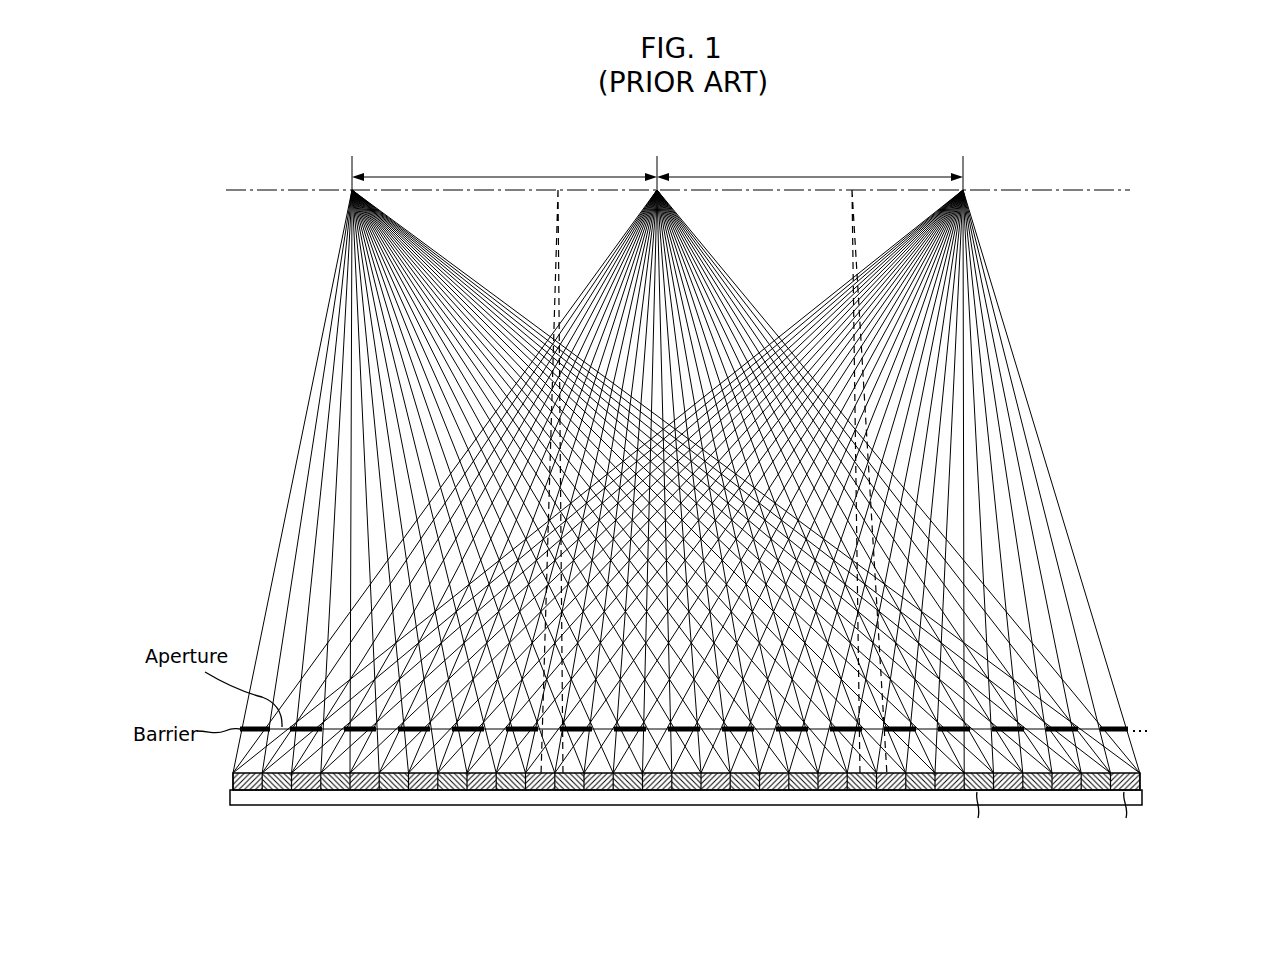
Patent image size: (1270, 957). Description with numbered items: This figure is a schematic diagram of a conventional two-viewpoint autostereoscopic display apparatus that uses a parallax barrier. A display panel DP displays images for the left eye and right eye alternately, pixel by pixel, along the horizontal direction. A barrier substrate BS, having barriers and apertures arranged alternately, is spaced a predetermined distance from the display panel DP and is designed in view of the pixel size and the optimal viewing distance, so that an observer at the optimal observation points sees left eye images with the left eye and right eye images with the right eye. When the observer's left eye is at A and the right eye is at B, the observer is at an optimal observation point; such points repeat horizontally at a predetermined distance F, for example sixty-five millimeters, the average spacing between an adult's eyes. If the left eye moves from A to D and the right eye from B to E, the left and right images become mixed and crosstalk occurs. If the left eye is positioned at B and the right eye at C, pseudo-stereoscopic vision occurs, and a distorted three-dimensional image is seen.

The optimal observation point for the left eye A is at (966, 188).
The optimal observation point for the right eye B is at (653, 188).
The observation point C is at (349, 188).
The intermediate observation point for the left eye D is at (855, 188).
The intermediate observation point for the right eye E is at (557, 188).
The predetermined distance F is at (657, 166).
The barrier substrate BS is at (1150, 731).
The display panel DP is at (1143, 788).